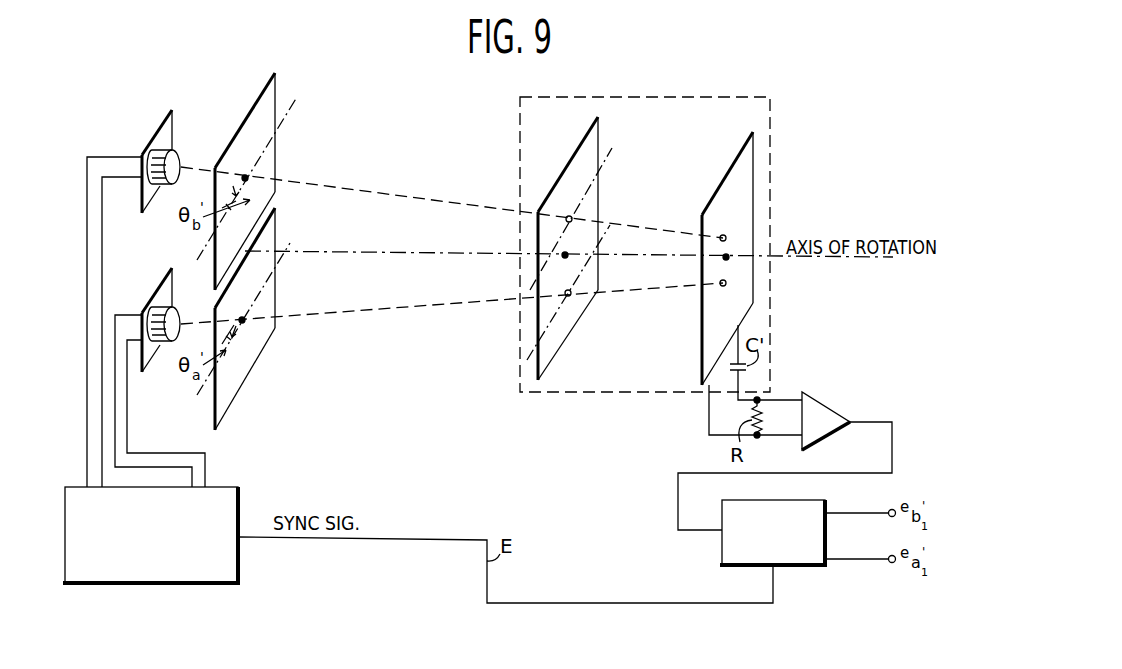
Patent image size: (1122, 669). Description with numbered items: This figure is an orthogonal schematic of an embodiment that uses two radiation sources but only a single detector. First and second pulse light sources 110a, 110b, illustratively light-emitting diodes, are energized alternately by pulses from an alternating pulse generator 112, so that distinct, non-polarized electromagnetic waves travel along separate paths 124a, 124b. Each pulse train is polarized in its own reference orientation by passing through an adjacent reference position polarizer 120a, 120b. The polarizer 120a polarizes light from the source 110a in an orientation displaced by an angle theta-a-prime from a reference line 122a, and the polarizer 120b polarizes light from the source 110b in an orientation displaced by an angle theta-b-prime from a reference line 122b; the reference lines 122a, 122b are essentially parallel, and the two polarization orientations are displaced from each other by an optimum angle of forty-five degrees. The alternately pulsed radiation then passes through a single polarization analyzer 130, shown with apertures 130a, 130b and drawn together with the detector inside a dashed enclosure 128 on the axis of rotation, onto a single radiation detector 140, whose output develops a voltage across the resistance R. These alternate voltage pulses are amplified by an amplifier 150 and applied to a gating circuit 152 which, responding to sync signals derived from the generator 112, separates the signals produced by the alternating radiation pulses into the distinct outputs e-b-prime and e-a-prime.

The first pulse light source 110a is at (172, 270).
The second pulse light source 110b is at (172, 117).
The alternating pulse generator 112 is at (238, 490).
The reference position polarizer 120a is at (260, 354).
The reference position polarizer 120b is at (267, 88).
The reference line 122a is at (282, 255).
The reference line 122b is at (296, 99).
The path 124a is at (405, 308).
The path 124b is at (420, 182).
The rotating assembly 128 is at (770, 161).
The polarization analyzer 130 is at (580, 146).
The aperture a 130a is at (556, 314).
The aperture b 130b is at (605, 162).
The radiation detector 140 is at (700, 350).
The amplifier 150 is at (828, 407).
The gating circuit 152 is at (722, 548).